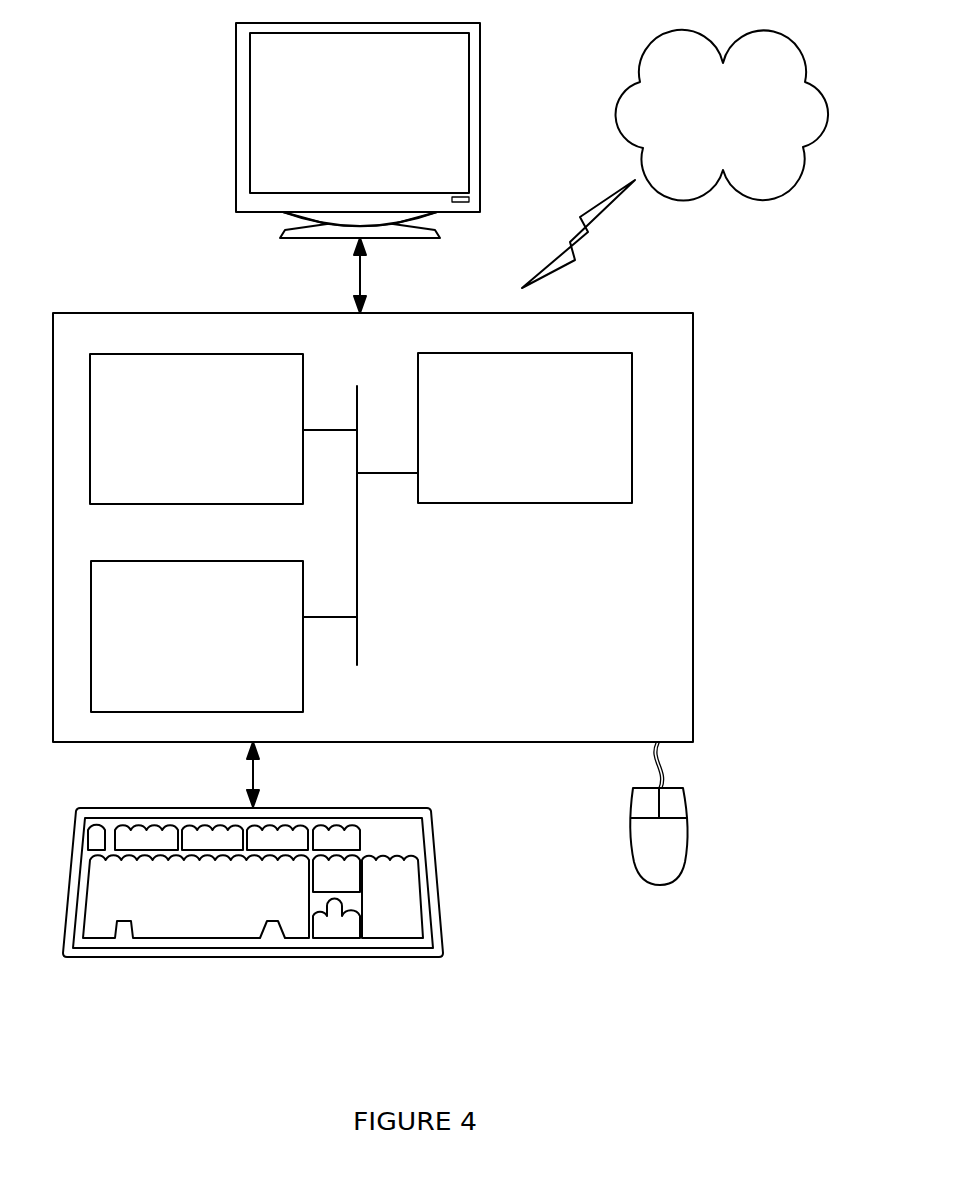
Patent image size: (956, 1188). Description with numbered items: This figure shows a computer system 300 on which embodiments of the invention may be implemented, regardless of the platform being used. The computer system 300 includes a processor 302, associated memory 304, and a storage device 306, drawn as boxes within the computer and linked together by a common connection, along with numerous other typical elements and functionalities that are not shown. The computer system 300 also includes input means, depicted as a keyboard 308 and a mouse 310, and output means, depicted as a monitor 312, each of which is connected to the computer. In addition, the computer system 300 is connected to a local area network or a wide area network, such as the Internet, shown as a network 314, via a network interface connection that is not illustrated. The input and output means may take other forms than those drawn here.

The computer system 300 is at (742, 325).
The processor 302 is at (525, 428).
The memory 304 is at (196, 429).
The storage device 306 is at (197, 636).
The keyboard 308 is at (253, 882).
The mouse 310 is at (658, 814).
The monitor 312 is at (358, 130).
The network 314 is at (722, 115).